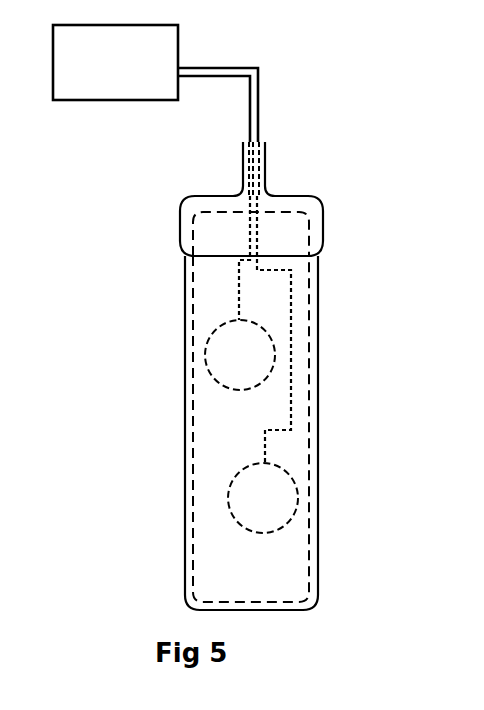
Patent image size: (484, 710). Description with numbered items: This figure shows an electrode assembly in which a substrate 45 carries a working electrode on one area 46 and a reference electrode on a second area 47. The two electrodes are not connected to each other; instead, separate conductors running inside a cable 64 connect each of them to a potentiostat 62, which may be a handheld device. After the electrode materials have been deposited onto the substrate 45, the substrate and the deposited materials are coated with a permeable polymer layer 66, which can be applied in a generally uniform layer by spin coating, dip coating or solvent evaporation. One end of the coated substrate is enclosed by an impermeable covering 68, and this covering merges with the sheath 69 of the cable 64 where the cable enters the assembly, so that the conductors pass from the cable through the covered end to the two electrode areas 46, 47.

The potentiostat 62 is at (115, 62).
The cable 64 is at (260, 120).
The sheath 69 is at (243, 163).
The impermeable covering 68 is at (186, 232).
The permeable polymer layer 66 is at (186, 566).
The substrate 45 is at (290, 560).
The working electrode area 46 is at (205, 350).
The reference electrode area 47 is at (229, 497).